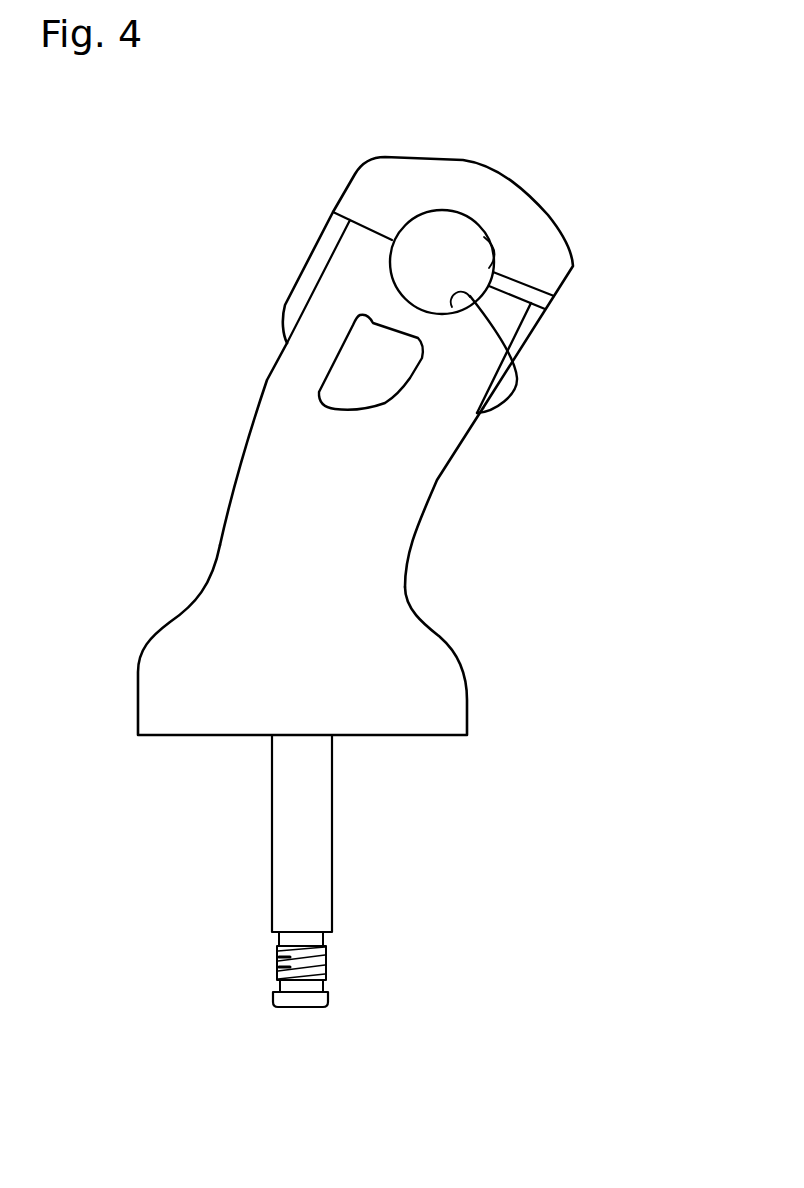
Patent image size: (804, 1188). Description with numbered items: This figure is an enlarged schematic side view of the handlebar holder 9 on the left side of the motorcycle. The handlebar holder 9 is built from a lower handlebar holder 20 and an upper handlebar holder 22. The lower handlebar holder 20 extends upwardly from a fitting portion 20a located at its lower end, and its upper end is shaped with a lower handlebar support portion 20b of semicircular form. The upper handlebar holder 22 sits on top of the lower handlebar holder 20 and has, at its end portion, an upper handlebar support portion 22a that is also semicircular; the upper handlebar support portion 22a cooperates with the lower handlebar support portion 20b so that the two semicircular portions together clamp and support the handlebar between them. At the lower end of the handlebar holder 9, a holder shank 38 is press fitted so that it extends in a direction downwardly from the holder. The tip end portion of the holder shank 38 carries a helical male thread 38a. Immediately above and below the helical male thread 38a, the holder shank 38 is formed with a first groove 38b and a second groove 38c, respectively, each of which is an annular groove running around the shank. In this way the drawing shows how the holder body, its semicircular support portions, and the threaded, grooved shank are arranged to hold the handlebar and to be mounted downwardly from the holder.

The handlebar holder 9 is at (417, 446).
The upper handlebar holder 22 is at (574, 262).
The upper handlebar support portion 22a is at (552, 301).
The lower handlebar holder 20 is at (379, 515).
The fitting portion 20a is at (443, 682).
The lower handlebar support portion 20b is at (505, 357).
The holder shank 38 is at (317, 855).
The helical male thread 38a is at (327, 963).
The first groove 38b is at (320, 938).
The second groove 38c is at (278, 988).